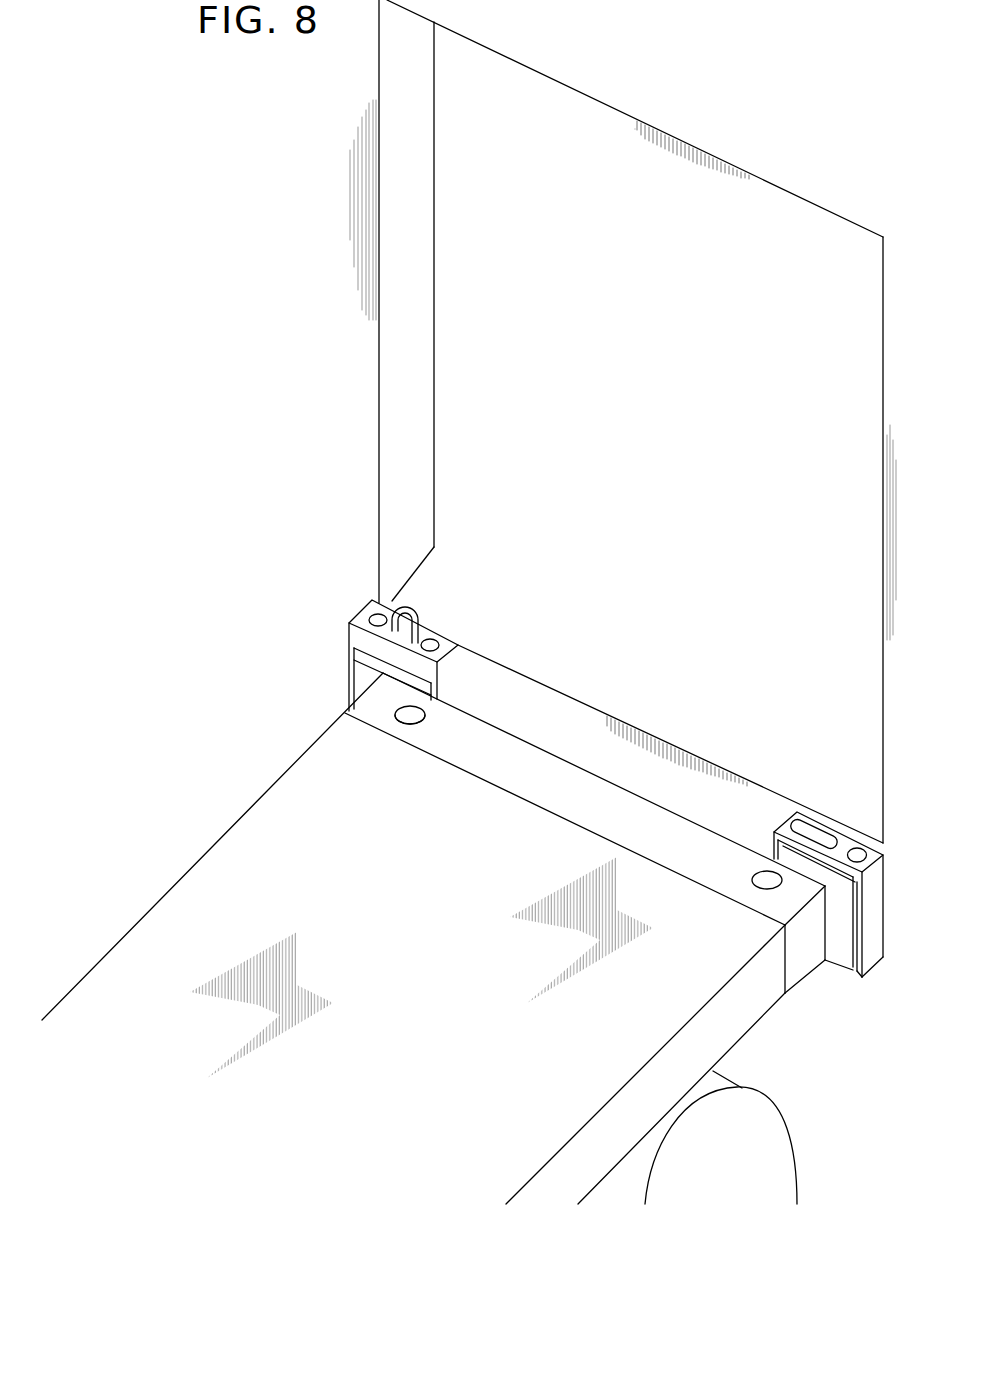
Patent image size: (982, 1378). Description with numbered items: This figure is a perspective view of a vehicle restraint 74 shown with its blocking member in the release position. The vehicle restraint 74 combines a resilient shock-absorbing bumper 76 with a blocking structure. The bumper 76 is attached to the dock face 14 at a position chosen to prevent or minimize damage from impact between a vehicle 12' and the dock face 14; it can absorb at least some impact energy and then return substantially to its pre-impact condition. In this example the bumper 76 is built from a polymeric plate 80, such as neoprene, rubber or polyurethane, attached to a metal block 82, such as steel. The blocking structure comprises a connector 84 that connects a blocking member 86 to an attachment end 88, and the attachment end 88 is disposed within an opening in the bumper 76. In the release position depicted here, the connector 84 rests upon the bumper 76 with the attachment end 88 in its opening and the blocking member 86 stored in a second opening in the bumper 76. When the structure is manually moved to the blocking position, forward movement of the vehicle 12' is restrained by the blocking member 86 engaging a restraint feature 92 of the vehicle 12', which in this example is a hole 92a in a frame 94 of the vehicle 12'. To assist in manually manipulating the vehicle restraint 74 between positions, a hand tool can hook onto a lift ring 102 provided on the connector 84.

The dock face 14 is at (580, 717).
The vehicle 12' is at (419, 938).
The frame 94 is at (589, 833).
The restraint feature 92 is at (395, 720).
The hole 92a is at (413, 721).
The vehicle restraint 74 is at (356, 594).
The connector 84 is at (356, 610).
The blocking member 86 is at (382, 612).
The attachment end 88 is at (437, 641).
The lift ring 102 is at (418, 607).
The resilient shock-absorbing bumper 76 is at (352, 662).
The polymeric plate 80 is at (367, 670).
The metal block 82 is at (448, 686).